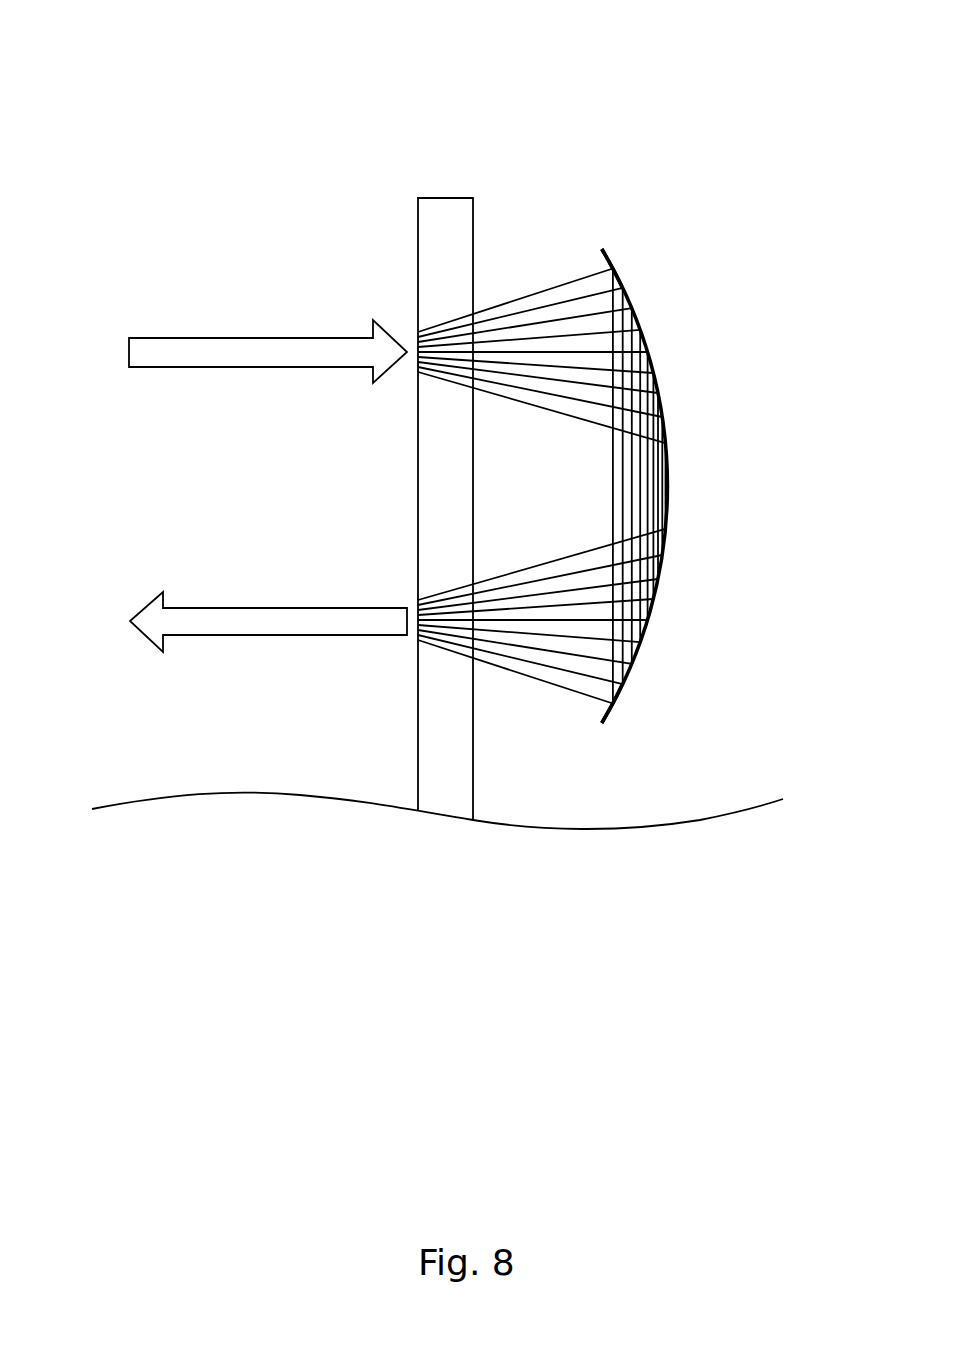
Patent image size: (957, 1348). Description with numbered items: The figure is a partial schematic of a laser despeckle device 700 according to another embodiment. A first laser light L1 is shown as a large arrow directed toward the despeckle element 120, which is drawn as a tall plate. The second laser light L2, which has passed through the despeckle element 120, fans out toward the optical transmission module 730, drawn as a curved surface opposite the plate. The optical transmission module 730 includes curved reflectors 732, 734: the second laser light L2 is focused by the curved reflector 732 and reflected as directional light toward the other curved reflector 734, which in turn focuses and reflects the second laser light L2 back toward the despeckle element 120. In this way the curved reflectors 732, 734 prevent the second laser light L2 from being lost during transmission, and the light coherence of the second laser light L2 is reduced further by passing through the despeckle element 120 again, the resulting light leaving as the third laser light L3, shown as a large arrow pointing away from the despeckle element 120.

The laser despeckle device 700 is at (86, 33).
The despeckle element 120 is at (445, 202).
The optical transmission module 730 is at (657, 186).
The curved reflector 732 is at (598, 251).
The curved reflector 734 is at (600, 716).
The first laser light L1 is at (200, 343).
The second laser light L2 is at (538, 290).
The third laser light L3 is at (220, 613).